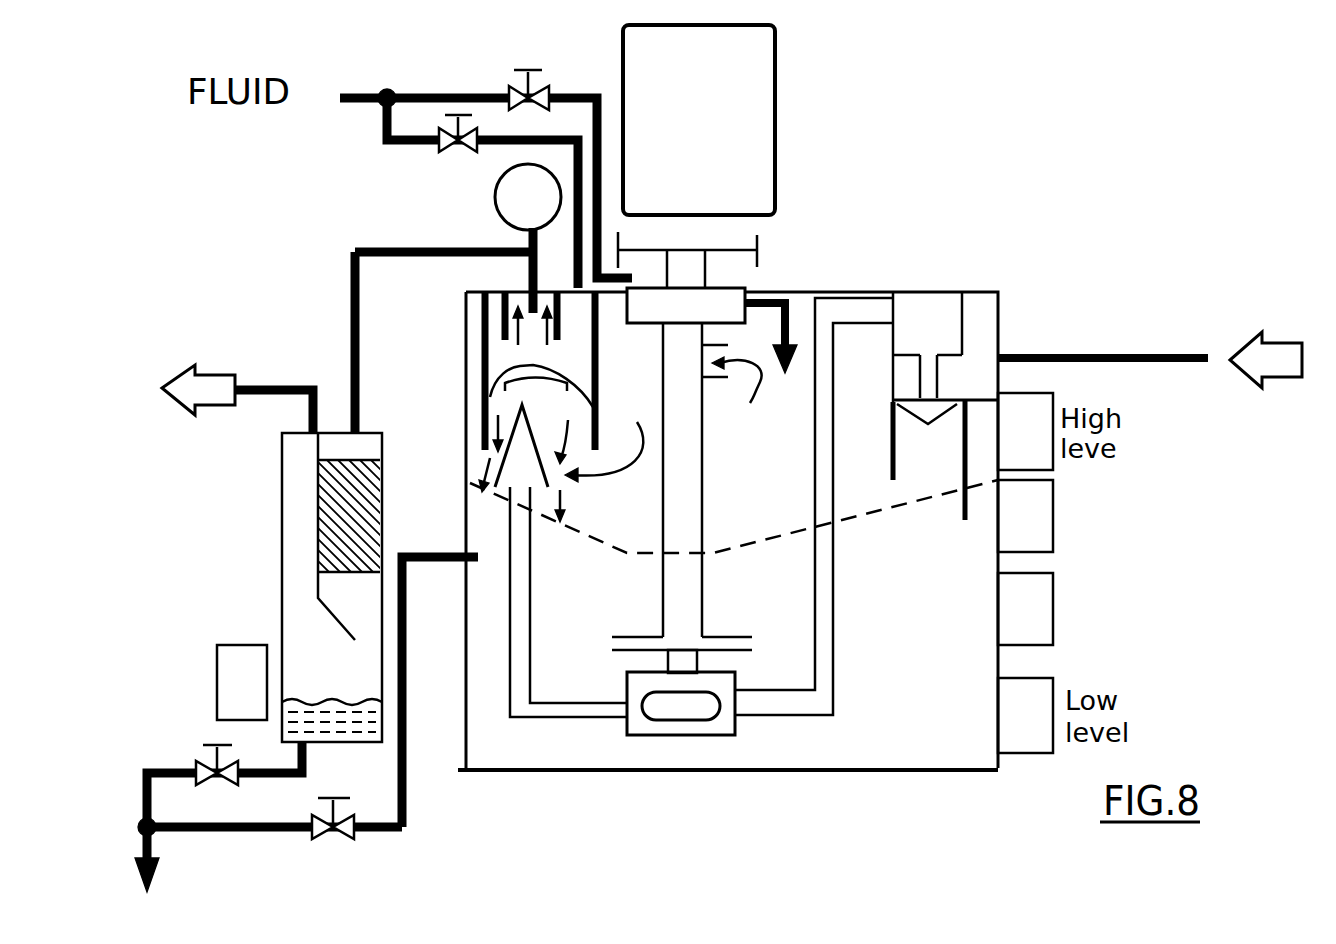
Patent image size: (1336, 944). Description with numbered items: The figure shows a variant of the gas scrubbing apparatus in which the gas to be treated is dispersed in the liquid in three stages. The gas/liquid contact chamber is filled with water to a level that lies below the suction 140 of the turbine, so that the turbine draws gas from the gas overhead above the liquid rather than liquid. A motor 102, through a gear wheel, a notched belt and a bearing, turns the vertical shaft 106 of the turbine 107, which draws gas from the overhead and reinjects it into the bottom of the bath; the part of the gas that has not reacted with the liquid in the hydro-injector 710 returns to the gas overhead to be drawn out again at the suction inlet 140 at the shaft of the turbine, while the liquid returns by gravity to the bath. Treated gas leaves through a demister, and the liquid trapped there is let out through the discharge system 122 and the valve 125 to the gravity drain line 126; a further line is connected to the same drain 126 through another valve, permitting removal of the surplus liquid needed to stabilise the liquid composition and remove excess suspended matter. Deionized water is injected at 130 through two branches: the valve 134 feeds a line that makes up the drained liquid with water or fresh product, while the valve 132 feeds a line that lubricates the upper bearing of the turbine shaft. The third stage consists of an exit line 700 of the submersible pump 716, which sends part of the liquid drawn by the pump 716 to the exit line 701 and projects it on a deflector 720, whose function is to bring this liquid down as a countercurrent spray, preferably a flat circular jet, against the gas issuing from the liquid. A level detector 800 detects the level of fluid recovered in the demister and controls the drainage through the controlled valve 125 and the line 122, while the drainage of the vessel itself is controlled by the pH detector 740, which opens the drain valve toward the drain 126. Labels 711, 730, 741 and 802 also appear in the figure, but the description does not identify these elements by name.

The motor 102 is at (753, 110).
The vertical shaft of the turbine 106 is at (688, 512).
The turbine 107 is at (725, 637).
The discharge system 122 is at (270, 792).
The valve 125 is at (200, 765).
The gravity drain line 126 is at (152, 845).
The deionized water injection point 130 is at (362, 97).
The valve 132 is at (545, 92).
The valve 134 is at (440, 146).
The suction of the turbine 140 is at (743, 395).
The exit line of the submersible pump 700 is at (533, 631).
The exit line 701 is at (493, 347).
The hydro-injector 710 is at (917, 292).
The water supply pipe 711 is at (1000, 348).
The submersible pump 716 is at (695, 735).
The deflector 720 is at (490, 392).
The circulation passage 730 is at (835, 622).
The pH detector 740 is at (495, 197).
The valve 741 is at (355, 838).
The level detector 800 is at (217, 672).
The collected liquid 802 is at (322, 700).